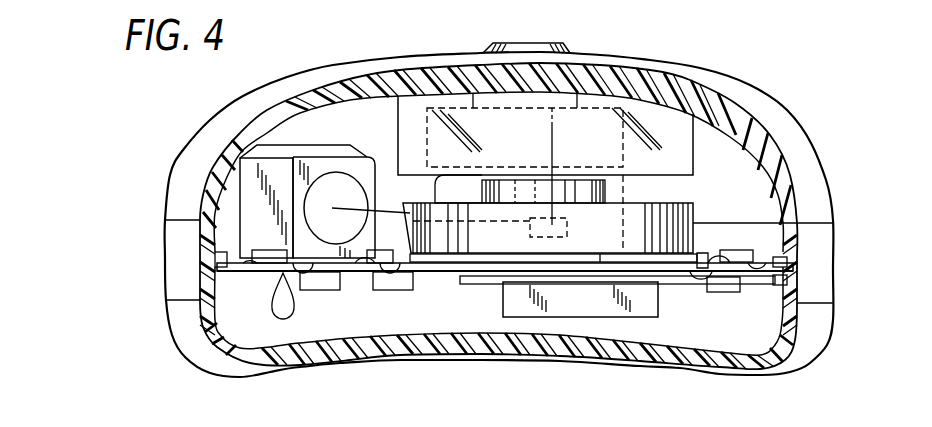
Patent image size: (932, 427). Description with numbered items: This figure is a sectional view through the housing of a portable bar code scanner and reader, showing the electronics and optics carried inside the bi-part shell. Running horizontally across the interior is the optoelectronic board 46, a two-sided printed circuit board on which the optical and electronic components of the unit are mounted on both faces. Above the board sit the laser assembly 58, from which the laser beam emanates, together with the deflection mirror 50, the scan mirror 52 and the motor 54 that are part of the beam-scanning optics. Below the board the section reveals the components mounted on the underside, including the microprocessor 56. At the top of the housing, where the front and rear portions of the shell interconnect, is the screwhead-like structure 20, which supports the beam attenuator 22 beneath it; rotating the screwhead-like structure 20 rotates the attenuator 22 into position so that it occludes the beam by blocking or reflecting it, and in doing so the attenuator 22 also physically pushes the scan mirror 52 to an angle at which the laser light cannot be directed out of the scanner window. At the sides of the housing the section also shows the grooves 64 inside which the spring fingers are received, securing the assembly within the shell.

The screwhead-like structure 20 is at (556, 43).
The beam attenuator 22 is at (623, 108).
The scan mirror 52 is at (694, 144).
The motor 54 is at (593, 195).
The deflection mirror 50 is at (529, 230).
The optoelectronic board 46 is at (785, 270).
The grooves 64 is at (790, 287).
The microprocessor 56 is at (600, 298).
The laser assembly 58 is at (263, 203).